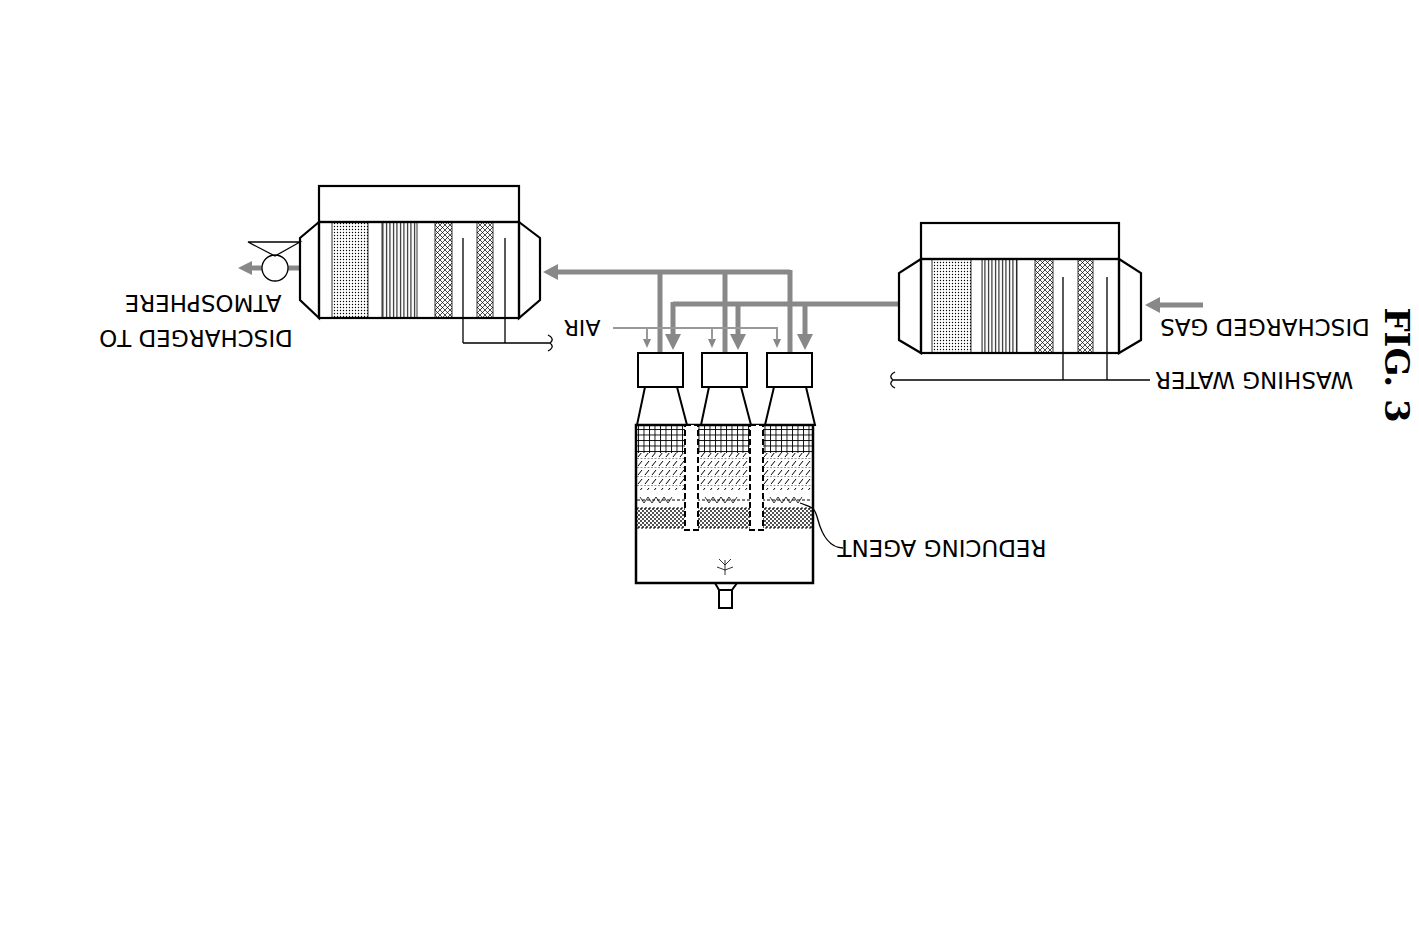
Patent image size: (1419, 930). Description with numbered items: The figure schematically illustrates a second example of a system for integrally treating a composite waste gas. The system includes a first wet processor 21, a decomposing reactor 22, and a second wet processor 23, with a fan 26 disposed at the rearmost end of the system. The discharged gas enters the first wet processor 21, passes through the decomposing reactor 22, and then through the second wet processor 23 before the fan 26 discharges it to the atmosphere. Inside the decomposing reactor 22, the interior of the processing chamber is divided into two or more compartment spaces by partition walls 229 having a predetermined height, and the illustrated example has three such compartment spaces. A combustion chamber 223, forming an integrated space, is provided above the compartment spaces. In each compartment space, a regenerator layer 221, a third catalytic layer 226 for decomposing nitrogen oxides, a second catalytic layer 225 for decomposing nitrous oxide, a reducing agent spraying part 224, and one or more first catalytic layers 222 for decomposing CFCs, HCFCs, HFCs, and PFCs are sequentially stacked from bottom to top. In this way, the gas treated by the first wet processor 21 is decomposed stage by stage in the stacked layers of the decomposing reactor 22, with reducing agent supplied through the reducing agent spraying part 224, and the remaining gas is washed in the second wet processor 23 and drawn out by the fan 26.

The first wet processor 21 is at (962, 198).
The decomposing reactor 22 is at (641, 509).
The second wet processor 23 is at (400, 338).
The fan 26 is at (270, 236).
The regenerator layer 221 is at (643, 438).
The first catalytic layer 222 is at (645, 529).
The combustion chamber 223 is at (660, 550).
The reducing agent spraying part 224 is at (645, 510).
The second catalytic layer 225 is at (643, 484).
The third catalytic layer 226 is at (643, 465).
The partition walls 229 is at (692, 530).